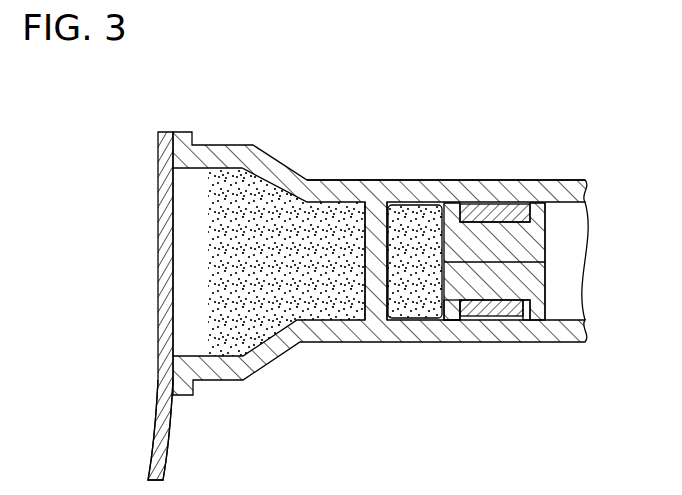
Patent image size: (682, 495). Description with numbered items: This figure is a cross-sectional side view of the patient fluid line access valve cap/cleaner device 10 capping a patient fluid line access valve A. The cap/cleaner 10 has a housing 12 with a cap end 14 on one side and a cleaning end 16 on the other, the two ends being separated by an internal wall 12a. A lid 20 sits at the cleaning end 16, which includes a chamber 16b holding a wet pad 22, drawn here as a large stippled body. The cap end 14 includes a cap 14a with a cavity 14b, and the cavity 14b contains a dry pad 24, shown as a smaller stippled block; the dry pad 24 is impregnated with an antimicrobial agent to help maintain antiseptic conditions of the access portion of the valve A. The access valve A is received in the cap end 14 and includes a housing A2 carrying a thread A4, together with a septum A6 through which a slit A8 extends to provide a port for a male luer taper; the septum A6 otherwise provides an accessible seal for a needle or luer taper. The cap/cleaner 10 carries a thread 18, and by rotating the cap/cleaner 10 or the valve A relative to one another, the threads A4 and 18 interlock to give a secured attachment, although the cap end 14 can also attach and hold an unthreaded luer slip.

The cap/cleaner device 10 is at (292, 160).
The housing 12 is at (270, 157).
The internal wall 12a is at (377, 298).
The cap end 14 is at (487, 205).
The cap 14a is at (419, 338).
The cavity 14b is at (458, 305).
The cleaning end 16 is at (217, 144).
The chamber 16b is at (192, 258).
The thread 18 is at (527, 316).
The lid 20 is at (163, 402).
The wet pad 22 is at (287, 288).
The dry pad 24 is at (427, 207).
The access valve A is at (572, 348).
The housing A2 is at (552, 180).
The thread A4 is at (458, 205).
The septum A6 is at (548, 240).
The slit A8 is at (547, 258).